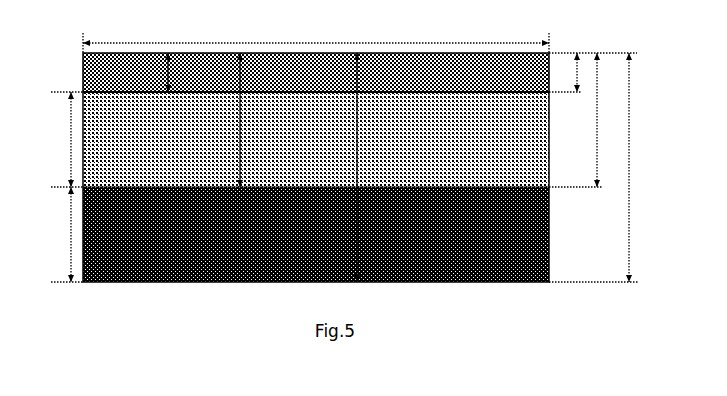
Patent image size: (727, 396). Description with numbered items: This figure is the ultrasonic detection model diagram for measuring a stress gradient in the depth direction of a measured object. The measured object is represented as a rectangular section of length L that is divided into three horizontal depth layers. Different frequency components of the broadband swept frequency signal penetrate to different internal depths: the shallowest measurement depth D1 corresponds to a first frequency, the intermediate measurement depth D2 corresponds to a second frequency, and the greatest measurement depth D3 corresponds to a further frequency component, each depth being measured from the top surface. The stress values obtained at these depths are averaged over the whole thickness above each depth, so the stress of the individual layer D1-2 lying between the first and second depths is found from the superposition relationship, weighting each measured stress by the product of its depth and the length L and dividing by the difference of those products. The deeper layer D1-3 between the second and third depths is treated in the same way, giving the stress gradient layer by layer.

The length L is at (316, 37).
The measurement depth D1 is at (565, 72).
The measurement depth D2 is at (586, 120).
The measurement depth D3 is at (618, 167).
The layer between depths D1 and D2 D1-2 is at (57, 139).
The layer between depths D2 and D3 D1-3 is at (57, 234).